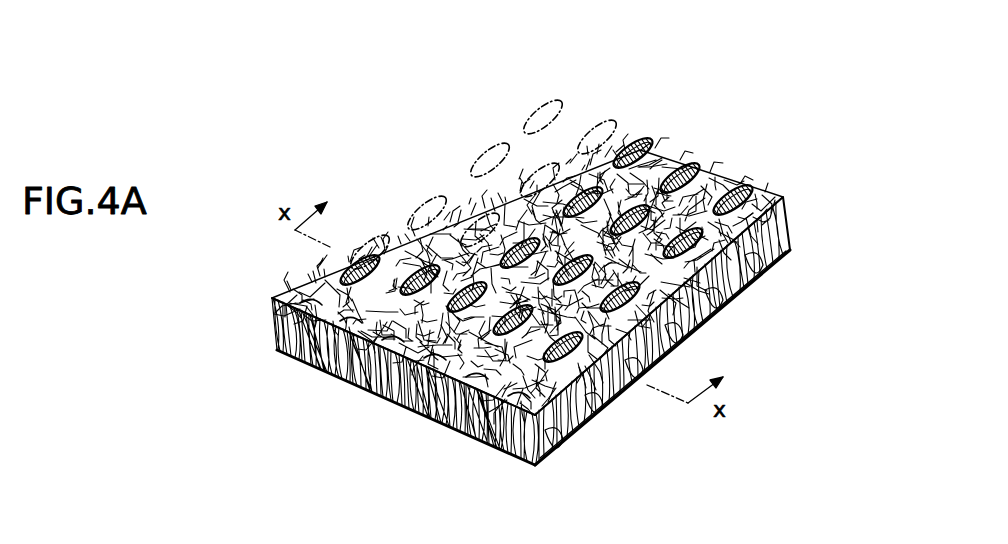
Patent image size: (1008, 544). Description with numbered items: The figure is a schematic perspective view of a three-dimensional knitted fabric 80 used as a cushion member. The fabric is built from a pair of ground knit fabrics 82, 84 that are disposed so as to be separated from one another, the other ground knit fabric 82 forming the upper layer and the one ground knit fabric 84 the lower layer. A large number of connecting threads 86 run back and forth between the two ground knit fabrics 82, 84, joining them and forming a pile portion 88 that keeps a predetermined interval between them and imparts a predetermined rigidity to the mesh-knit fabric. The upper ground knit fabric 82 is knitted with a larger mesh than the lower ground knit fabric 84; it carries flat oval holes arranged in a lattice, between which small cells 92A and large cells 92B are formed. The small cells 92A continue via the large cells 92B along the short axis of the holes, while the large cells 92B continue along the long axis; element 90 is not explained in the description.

The three-dimensional knitted fabric 80 is at (626, 82).
The other ground knit fabric 82 is at (752, 160).
The one ground knit fabric 84 is at (505, 452).
The connecting threads 86 is at (423, 397).
The pile portion 88 is at (796, 213).
The fiber layers 90 is at (747, 280).
The small cells 92A is at (522, 133).
The large cells 92B is at (450, 233).